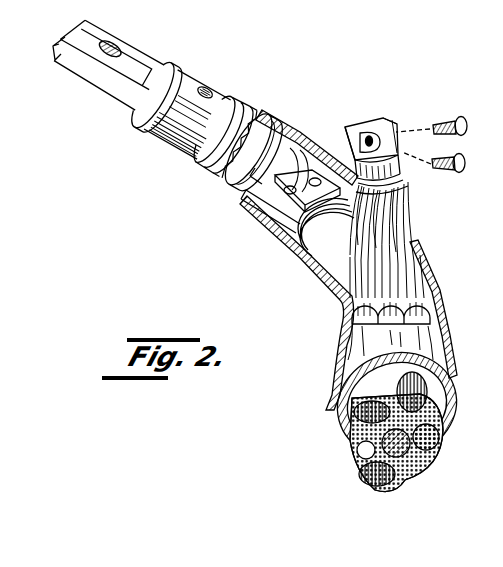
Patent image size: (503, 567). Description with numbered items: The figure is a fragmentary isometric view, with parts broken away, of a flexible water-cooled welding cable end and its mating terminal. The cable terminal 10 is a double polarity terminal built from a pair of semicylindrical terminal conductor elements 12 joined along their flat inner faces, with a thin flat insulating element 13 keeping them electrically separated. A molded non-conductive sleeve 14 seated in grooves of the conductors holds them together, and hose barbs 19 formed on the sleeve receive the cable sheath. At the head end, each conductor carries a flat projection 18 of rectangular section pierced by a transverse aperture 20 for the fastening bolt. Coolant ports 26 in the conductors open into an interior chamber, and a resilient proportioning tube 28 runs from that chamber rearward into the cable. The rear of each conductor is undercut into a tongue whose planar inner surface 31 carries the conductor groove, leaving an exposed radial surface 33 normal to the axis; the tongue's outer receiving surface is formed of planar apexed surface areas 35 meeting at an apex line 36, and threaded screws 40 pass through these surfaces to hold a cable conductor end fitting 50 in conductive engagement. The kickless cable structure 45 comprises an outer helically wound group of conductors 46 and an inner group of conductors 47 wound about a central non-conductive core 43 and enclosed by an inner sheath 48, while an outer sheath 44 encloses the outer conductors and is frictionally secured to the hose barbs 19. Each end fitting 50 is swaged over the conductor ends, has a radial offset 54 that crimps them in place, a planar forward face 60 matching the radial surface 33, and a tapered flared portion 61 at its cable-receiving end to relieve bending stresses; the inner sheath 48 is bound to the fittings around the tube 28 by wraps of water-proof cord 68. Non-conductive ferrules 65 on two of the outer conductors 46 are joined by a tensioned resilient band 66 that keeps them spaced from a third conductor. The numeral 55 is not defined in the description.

The cable terminal 10 is at (195, 57).
The terminal conductor elements 12 is at (238, 210).
The insulating element 13 is at (62, 42).
The molded sleeve 14 is at (153, 146).
The flat projections 18 is at (140, 62).
The hose barbs 19 is at (282, 122).
The aperture 20 is at (113, 45).
The coolant ports 26 is at (207, 90).
The proportioning tube 28 is at (326, 227).
The inner surface of tongue 31 is at (257, 220).
The radial surface area 33 is at (289, 166).
The planar apexed surface areas 35 is at (317, 180).
The apex line 36 is at (312, 176).
The threaded screw 40 is at (473, 136).
The central core 43 is at (408, 472).
The outer sheath 44 is at (452, 335).
The kickless cable conductor structure 45 is at (408, 263).
The outer conductors 46 is at (443, 388).
The inner conductors 47 is at (447, 440).
The inner sheath 48 is at (318, 277).
The cable conductor end fitting 50 is at (387, 119).
The radial offset 54 is at (400, 168).
The housing face 55 is at (397, 132).
The planar forward face 60 is at (363, 120).
The tapered flared portion 61 is at (402, 194).
The non-conductive ferrules 65 is at (344, 309).
The resilient band 66 is at (403, 320).
The water-proof cord 68 is at (306, 258).